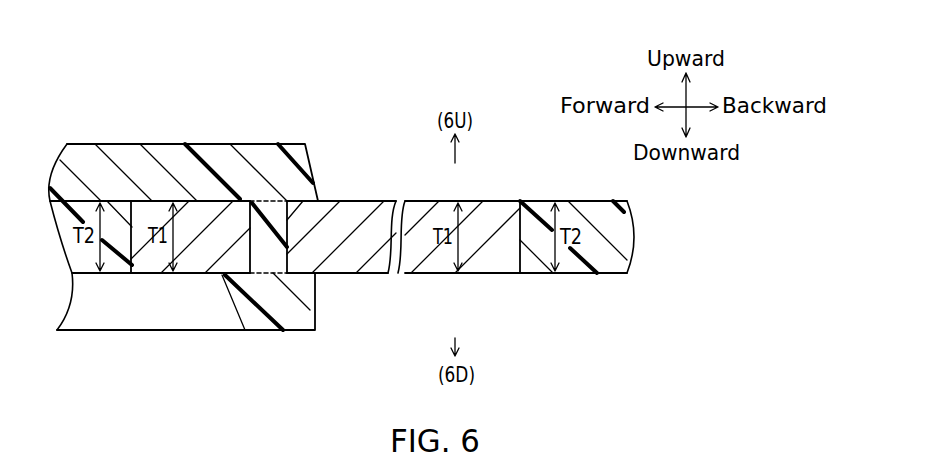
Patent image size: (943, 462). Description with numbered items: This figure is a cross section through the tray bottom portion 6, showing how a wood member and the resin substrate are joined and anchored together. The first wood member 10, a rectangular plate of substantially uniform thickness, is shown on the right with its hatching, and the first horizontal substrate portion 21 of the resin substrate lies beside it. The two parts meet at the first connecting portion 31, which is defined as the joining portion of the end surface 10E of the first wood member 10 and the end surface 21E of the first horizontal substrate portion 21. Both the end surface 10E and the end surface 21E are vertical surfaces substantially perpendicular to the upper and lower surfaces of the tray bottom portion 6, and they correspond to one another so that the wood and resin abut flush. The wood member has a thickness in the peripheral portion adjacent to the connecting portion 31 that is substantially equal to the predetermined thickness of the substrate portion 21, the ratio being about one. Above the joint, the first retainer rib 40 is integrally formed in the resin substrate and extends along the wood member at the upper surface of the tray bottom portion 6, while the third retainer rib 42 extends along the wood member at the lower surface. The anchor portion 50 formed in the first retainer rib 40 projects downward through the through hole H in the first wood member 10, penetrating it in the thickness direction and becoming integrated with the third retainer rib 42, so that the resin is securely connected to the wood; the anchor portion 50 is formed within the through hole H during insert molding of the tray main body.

The tray bottom portion 6 is at (365, 158).
The first wood member 10 is at (428, 257).
The end surface of first wood member 10E is at (110, 201).
The first horizontal substrate portion 21 is at (600, 250).
The end surface of first horizontal substrate portion 21E is at (125, 232).
The first connecting portion 31 is at (143, 263).
The first retainer rib 40 is at (205, 143).
The third retainer rib 42 is at (190, 305).
The anchor portion 50 is at (275, 236).
The through hole H is at (275, 273).